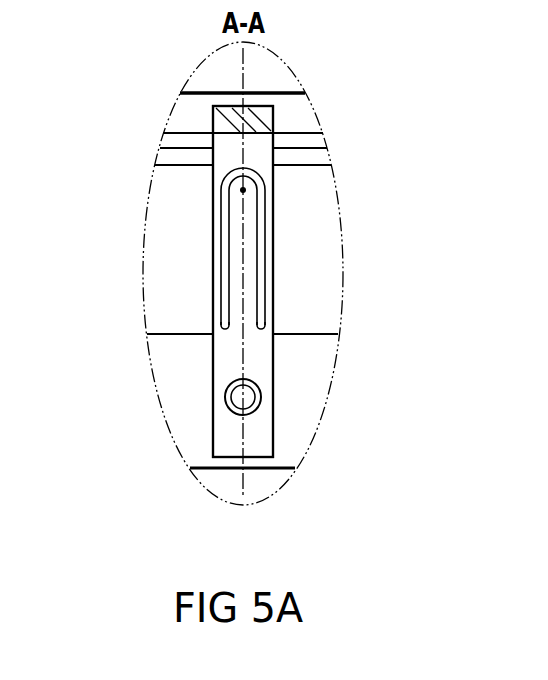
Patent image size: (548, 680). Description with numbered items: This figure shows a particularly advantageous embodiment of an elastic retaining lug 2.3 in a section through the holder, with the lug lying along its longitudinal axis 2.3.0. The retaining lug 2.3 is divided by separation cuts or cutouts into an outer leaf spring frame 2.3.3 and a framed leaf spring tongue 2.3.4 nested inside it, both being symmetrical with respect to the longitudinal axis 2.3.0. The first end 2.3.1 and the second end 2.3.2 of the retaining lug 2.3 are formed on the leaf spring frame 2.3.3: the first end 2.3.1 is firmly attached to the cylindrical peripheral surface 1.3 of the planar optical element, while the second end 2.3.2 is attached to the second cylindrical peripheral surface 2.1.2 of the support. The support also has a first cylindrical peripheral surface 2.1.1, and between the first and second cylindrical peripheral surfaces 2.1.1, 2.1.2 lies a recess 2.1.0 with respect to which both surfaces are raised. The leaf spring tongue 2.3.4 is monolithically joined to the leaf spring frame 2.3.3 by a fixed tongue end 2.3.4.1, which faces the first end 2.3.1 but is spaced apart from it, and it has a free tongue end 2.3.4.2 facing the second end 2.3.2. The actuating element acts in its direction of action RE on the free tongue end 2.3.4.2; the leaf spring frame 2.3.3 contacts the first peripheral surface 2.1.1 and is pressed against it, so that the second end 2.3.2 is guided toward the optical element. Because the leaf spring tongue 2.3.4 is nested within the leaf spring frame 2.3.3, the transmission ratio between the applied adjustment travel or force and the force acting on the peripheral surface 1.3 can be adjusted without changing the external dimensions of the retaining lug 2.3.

The cylindrical peripheral surface 1.3 is at (300, 118).
The recess 2.1.0 is at (196, 268).
The first cylindrical peripheral surface 2.1.1 is at (178, 158).
The second cylindrical peripheral surface 2.1.2 is at (180, 365).
The retaining lug 2.3 is at (165, 309).
The longitudinal axis 2.3.0 is at (240, 82).
The first end 2.3.1 is at (305, 95).
The second end 2.3.2 is at (258, 449).
The leaf spring frame 2.3.3 is at (268, 238).
The leaf spring tongue 2.3.4 is at (247, 280).
The fixed tongue end 2.3.4.1 is at (245, 323).
The free tongue end 2.3.4.2 is at (262, 180).
The direction of action RE is at (242, 190).